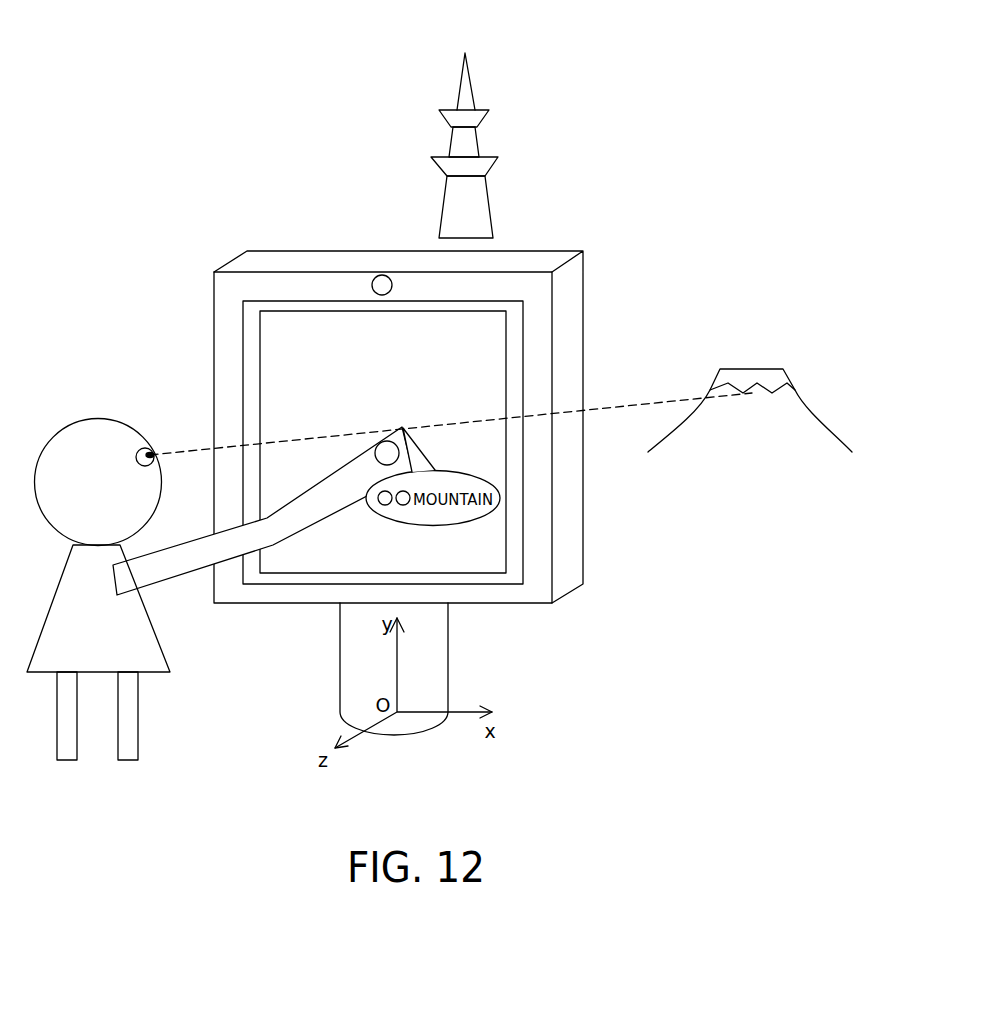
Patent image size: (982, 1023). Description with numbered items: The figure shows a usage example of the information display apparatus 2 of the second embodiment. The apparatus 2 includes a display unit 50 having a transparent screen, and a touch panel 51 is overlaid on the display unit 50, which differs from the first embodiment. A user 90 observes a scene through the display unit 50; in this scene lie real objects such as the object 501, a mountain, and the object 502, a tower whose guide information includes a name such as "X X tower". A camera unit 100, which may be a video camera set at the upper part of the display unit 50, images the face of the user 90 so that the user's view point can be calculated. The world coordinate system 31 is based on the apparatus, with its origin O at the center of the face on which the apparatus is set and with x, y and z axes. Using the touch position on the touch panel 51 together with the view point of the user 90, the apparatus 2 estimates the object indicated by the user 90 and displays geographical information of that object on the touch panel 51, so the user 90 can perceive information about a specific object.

The information display apparatus 2 is at (328, 262).
The camera unit 100 is at (382, 275).
The display unit 50 is at (515, 555).
The touch panel 51 is at (467, 535).
The world coordinate system 31 is at (465, 717).
The user 90 is at (97, 428).
The object 501 is at (752, 422).
The object 502 is at (458, 82).